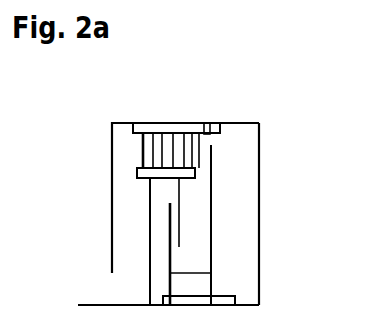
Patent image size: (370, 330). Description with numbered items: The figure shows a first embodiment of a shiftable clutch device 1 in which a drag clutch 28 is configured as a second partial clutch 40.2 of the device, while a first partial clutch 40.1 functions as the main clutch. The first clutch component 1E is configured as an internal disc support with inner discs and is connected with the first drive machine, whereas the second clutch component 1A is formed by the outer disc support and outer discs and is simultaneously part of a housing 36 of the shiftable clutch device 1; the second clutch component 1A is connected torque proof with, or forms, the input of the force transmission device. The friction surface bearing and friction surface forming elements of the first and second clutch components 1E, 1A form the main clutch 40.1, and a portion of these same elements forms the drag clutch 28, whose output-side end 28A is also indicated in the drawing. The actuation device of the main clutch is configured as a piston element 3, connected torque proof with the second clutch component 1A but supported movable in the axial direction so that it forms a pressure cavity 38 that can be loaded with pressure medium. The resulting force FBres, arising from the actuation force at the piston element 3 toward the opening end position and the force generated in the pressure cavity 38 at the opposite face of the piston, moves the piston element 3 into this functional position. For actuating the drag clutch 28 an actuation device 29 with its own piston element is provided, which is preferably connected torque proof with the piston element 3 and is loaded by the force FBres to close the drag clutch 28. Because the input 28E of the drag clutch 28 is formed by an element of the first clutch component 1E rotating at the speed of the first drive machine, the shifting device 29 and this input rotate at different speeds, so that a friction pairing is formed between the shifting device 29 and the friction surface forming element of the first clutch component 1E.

The shiftable clutch device 1 is at (206, 81).
The second clutch component 1A is at (150, 123).
The first clutch component 1E is at (150, 198).
The piston element 3 is at (258, 225).
The drag clutch 28 is at (168, 116).
The spring end 28A is at (209, 122).
The input of the drag clutch 28E is at (180, 203).
The actuation device 29 is at (104, 236).
The housing 36 is at (247, 132).
The pressure cavity 38 is at (236, 267).
The first partial clutch 40.1 is at (141, 151).
The second partial clutch 40.2 is at (183, 149).
The resulting force FBres is at (167, 240).